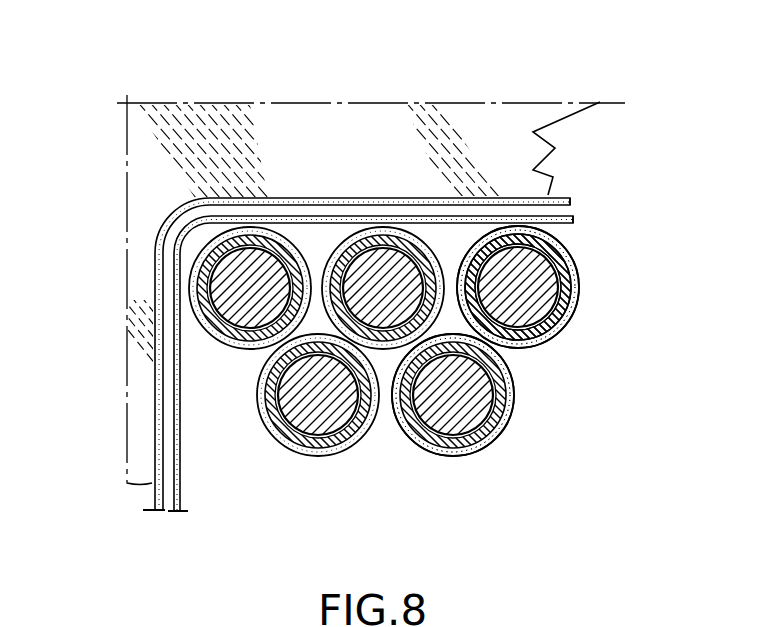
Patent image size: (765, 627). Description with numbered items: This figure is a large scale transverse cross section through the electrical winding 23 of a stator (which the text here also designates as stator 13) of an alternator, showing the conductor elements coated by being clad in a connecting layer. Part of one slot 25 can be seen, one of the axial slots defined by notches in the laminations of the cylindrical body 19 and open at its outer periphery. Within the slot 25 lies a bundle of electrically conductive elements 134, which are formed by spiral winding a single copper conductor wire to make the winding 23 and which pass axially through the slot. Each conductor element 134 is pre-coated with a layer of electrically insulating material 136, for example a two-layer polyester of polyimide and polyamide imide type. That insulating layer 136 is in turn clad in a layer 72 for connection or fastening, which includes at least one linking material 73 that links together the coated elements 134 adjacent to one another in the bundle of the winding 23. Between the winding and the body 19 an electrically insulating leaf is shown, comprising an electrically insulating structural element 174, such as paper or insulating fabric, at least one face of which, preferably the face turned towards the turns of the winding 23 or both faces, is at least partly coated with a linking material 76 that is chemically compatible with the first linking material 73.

The rotor 13 is at (562, 132).
The body 19 is at (345, 130).
The electrical winding 23 is at (248, 272).
The slot 25 is at (212, 372).
The layer for connection or fastening 72 is at (517, 393).
The linking material 73 is at (478, 458).
The linking material 76 is at (455, 220).
The electrical conductor elements 134 is at (562, 308).
The layer of electrically insulating material 136 is at (580, 278).
The electrically insulating structural element 174 is at (562, 222).